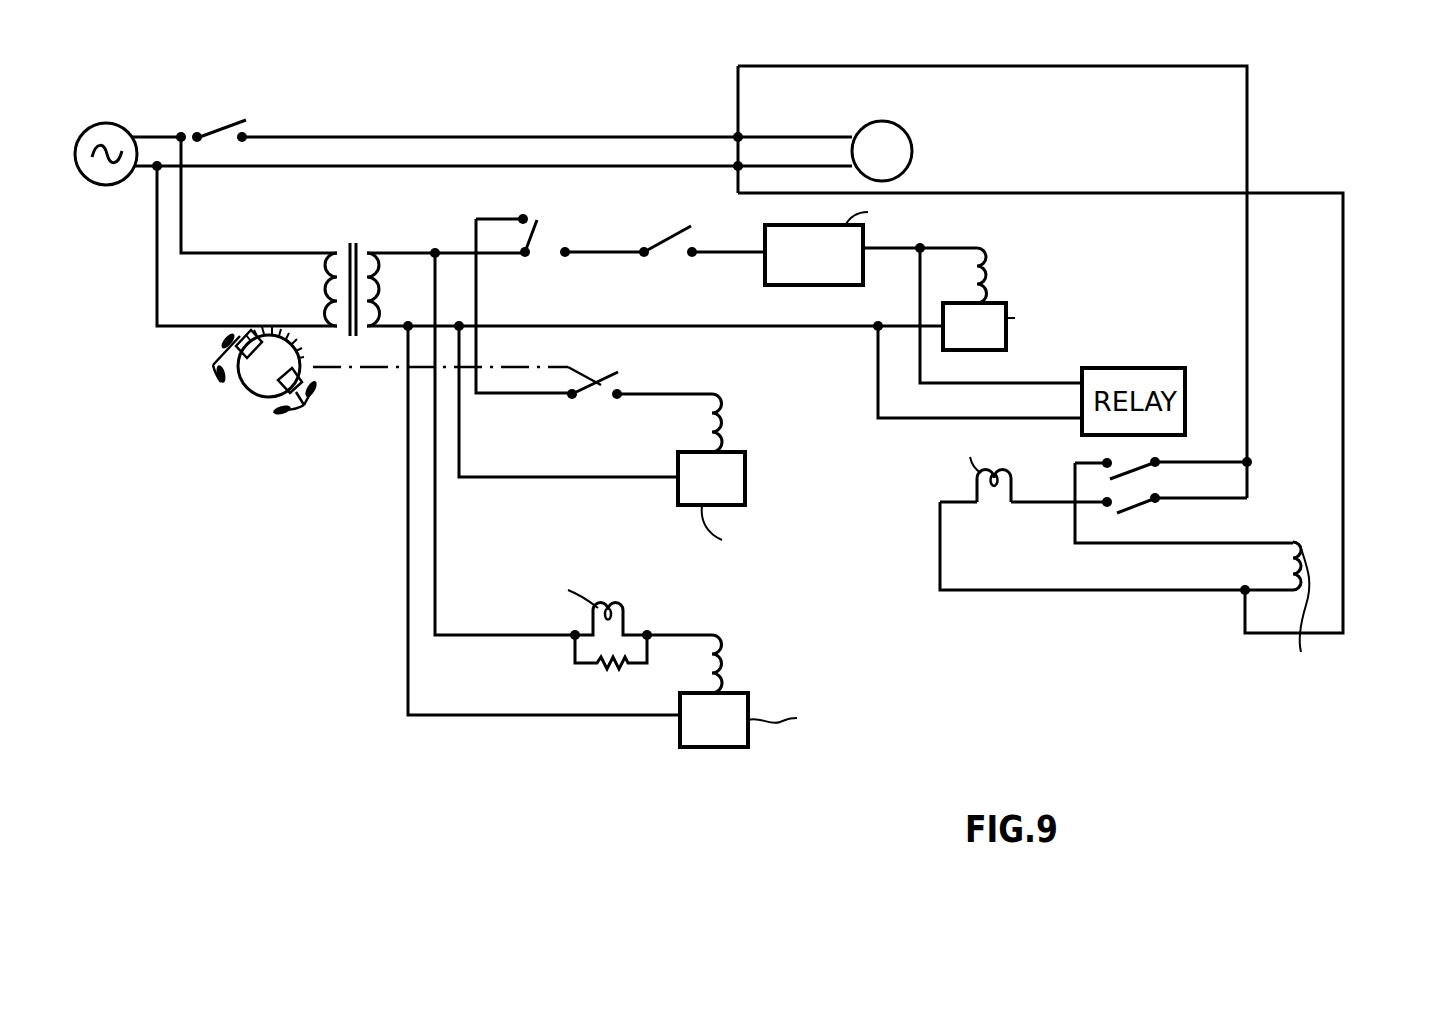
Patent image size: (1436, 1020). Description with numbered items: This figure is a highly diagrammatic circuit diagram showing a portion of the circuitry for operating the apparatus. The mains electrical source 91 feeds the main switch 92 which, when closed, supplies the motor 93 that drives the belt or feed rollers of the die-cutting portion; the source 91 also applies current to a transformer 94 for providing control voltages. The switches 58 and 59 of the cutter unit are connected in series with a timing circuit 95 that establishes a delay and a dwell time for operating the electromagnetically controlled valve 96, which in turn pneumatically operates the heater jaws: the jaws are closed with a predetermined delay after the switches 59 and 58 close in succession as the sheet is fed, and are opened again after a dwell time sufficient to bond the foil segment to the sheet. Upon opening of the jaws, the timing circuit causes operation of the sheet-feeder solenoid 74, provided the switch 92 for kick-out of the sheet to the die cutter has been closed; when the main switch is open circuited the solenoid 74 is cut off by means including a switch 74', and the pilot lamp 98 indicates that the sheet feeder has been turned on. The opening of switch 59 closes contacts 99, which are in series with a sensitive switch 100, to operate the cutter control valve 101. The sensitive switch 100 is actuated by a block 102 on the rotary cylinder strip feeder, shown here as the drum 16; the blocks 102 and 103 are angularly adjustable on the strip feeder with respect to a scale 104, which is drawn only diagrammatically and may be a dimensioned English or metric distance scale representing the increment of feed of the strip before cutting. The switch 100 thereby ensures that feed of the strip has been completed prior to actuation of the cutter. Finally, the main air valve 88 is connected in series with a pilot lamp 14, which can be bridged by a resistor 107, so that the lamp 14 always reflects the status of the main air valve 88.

The mains electrical source 91 is at (108, 124).
The main switch 92 is at (221, 119).
The motor 93 is at (900, 117).
The transformer 94 is at (352, 250).
The contacts 99 is at (538, 225).
The switch 59 is at (565, 257).
The switch 58 is at (668, 245).
The timing circuit 95 is at (765, 283).
The electromagnetically controlled valve 96 is at (1006, 340).
The sensitive switch 100 is at (612, 348).
The cam drum 16 is at (243, 393).
The scale 104 is at (297, 352).
The block 103 is at (214, 364).
The block 102 is at (306, 405).
The cutter control valve 101 is at (745, 480).
The pilot lamp 98 is at (1015, 491).
The switch 74' is at (1145, 503).
The solenoid 74 is at (1310, 602).
The pilot lamp 14 is at (628, 612).
The resistor 107 is at (605, 664).
The main air valve 88 is at (710, 748).